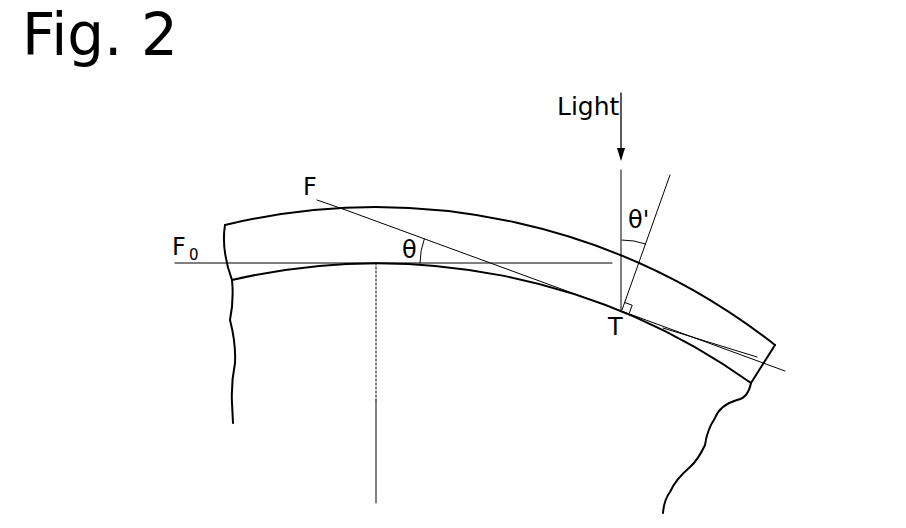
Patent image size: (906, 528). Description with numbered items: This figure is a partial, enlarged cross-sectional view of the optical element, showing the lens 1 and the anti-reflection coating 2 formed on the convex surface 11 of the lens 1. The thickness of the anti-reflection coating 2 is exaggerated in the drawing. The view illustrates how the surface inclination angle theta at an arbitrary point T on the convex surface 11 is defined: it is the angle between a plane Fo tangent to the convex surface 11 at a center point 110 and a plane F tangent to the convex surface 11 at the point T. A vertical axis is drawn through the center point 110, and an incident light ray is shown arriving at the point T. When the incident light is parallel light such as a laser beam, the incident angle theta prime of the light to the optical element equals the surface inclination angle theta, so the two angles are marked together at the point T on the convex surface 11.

The lens 1 is at (680, 433).
The anti-reflection coating 2 is at (687, 300).
The convex surface 11 is at (737, 368).
The center point 110 is at (375, 263).